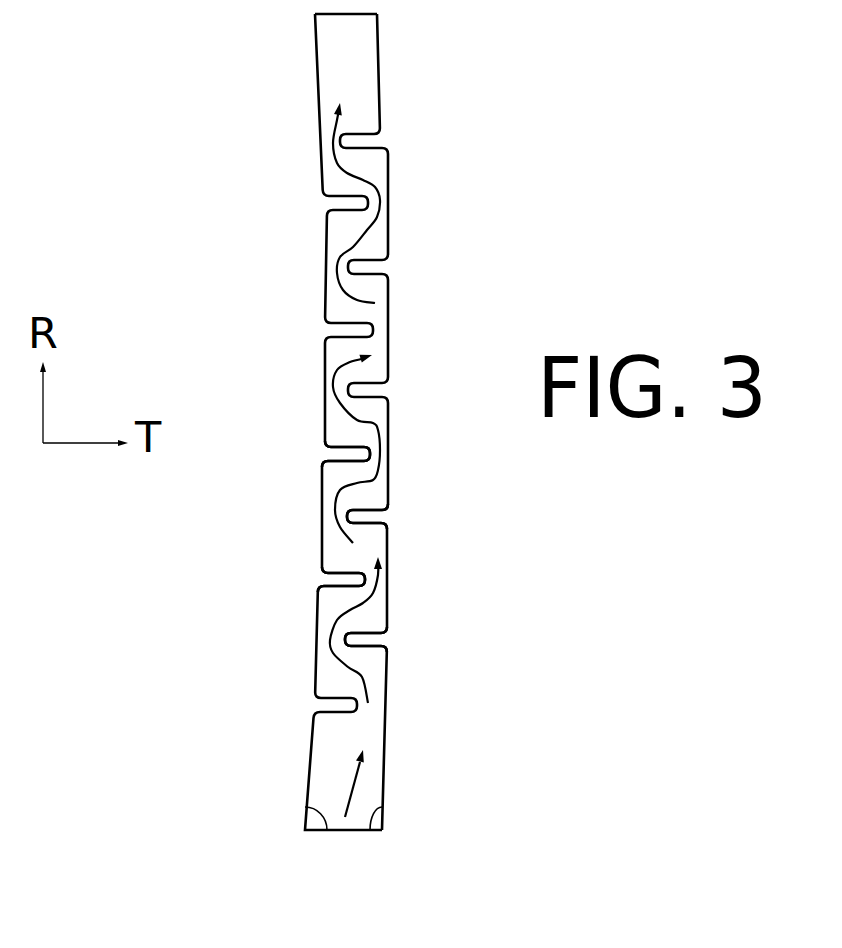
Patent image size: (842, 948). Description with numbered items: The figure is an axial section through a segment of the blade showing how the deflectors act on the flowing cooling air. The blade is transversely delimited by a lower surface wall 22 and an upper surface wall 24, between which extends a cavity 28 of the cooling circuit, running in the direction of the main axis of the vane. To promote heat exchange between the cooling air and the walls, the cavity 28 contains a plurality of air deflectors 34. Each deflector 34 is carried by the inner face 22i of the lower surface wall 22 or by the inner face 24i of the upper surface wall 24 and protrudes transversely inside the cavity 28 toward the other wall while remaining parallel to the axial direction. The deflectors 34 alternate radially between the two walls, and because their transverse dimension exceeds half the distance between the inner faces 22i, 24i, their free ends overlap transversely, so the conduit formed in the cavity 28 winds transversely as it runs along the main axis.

The lower surface wall 22 is at (385, 757).
The upper surface wall 24 is at (307, 770).
The inner face of the lower surface wall 22i is at (368, 830).
The inner face of the upper surface wall 24i is at (322, 830).
The cavity 28 is at (238, 628).
The air deflector 34 is at (332, 455).